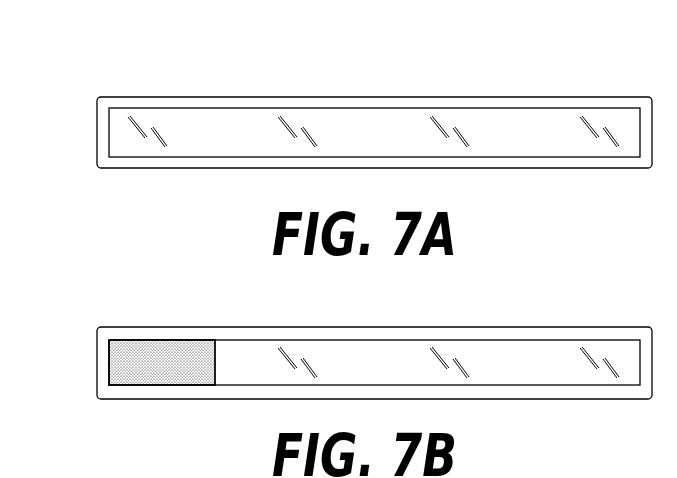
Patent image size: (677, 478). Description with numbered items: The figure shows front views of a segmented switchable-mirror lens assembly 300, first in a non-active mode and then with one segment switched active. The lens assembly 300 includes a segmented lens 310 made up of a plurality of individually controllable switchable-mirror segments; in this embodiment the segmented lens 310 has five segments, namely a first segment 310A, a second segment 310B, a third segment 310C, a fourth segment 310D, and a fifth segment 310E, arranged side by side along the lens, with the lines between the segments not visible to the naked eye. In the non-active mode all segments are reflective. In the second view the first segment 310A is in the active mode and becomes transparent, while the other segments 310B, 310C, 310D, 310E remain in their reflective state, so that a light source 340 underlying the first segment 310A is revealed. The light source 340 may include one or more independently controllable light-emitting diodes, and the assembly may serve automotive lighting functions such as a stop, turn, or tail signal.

In FIG. 7A, the segmented switchable-mirror lens assembly 300 is at (137, 66).
In FIG. 7B, the segmented switchable-mirror lens assembly 300 is at (138, 292).
In FIG. 7A, the segmented lens 310 is at (127, 136).
In FIG. 7A, the first segment 310A is at (166, 126).
In FIG. 7B, the first segment 310A is at (154, 419).
In FIG. 7A, the second segment 310B is at (258, 126).
In FIG. 7A, the third segment 310C is at (368, 126).
In FIG. 7A, the fourth segment 310D is at (480, 126).
In FIG. 7A, the fifth segment 310E is at (603, 126).
In FIG. 7B, the light source 340 is at (156, 356).